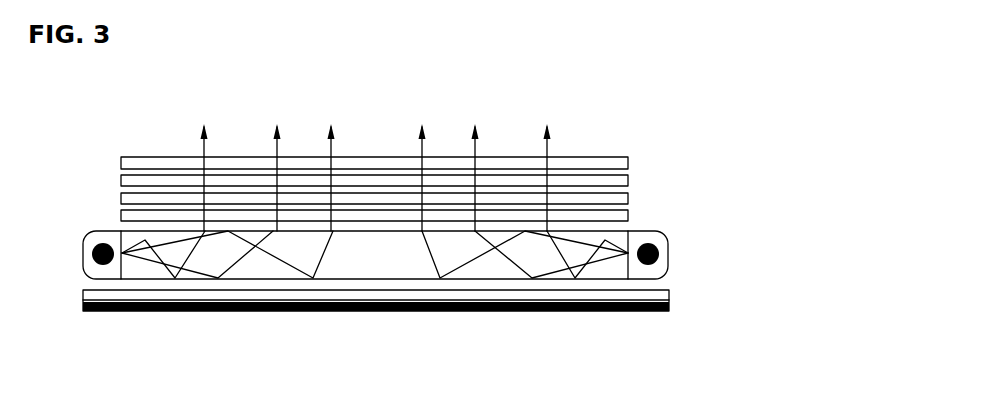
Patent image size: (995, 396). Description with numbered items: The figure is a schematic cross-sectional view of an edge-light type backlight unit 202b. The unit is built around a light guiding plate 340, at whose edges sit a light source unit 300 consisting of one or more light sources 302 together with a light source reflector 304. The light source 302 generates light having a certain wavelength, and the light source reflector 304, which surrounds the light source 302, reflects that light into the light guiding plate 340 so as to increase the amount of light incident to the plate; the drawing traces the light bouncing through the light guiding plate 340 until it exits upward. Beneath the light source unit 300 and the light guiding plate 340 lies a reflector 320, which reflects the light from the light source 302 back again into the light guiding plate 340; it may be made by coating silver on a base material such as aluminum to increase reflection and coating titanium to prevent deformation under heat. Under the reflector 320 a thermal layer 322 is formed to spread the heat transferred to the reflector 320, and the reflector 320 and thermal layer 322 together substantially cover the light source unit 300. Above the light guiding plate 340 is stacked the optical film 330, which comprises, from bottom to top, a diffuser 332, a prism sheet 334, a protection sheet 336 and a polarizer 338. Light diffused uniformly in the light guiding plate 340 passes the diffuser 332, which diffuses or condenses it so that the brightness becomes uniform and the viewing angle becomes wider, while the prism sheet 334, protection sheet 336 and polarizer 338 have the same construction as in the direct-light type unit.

The edge-light type backlight unit 202b is at (787, 310).
The light source unit 300 is at (79, 226).
The light source 302 is at (100, 264).
The light source reflector 304 is at (102, 230).
The reflector 320 is at (293, 300).
The thermal layer 322 is at (500, 312).
The optical film 330 is at (730, 217).
The diffuser 332 is at (628, 217).
The prism sheet 334 is at (628, 197).
The protection sheet 336 is at (628, 180).
The polarizer 338 is at (609, 157).
The light guiding plate 340 is at (370, 268).